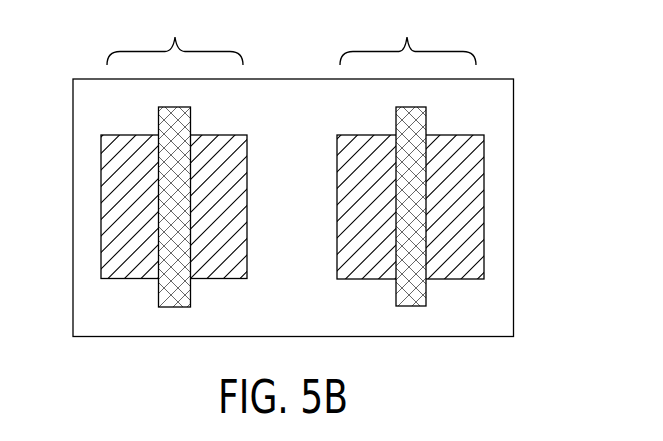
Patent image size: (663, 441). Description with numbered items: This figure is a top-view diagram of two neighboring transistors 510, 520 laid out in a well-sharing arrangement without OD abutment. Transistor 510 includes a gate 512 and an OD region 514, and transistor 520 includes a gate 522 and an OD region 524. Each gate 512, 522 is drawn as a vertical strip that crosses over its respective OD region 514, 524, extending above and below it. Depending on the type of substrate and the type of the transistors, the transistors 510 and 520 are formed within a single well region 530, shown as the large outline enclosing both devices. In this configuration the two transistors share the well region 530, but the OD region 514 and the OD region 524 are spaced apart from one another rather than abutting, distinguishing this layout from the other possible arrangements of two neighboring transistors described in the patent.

The transistor 510 is at (175, 36).
The gate 512 is at (178, 293).
The OD region 514 is at (117, 203).
The transistor 520 is at (408, 36).
The gate 522 is at (412, 295).
The OD region 524 is at (468, 206).
The well region 530 is at (514, 140).